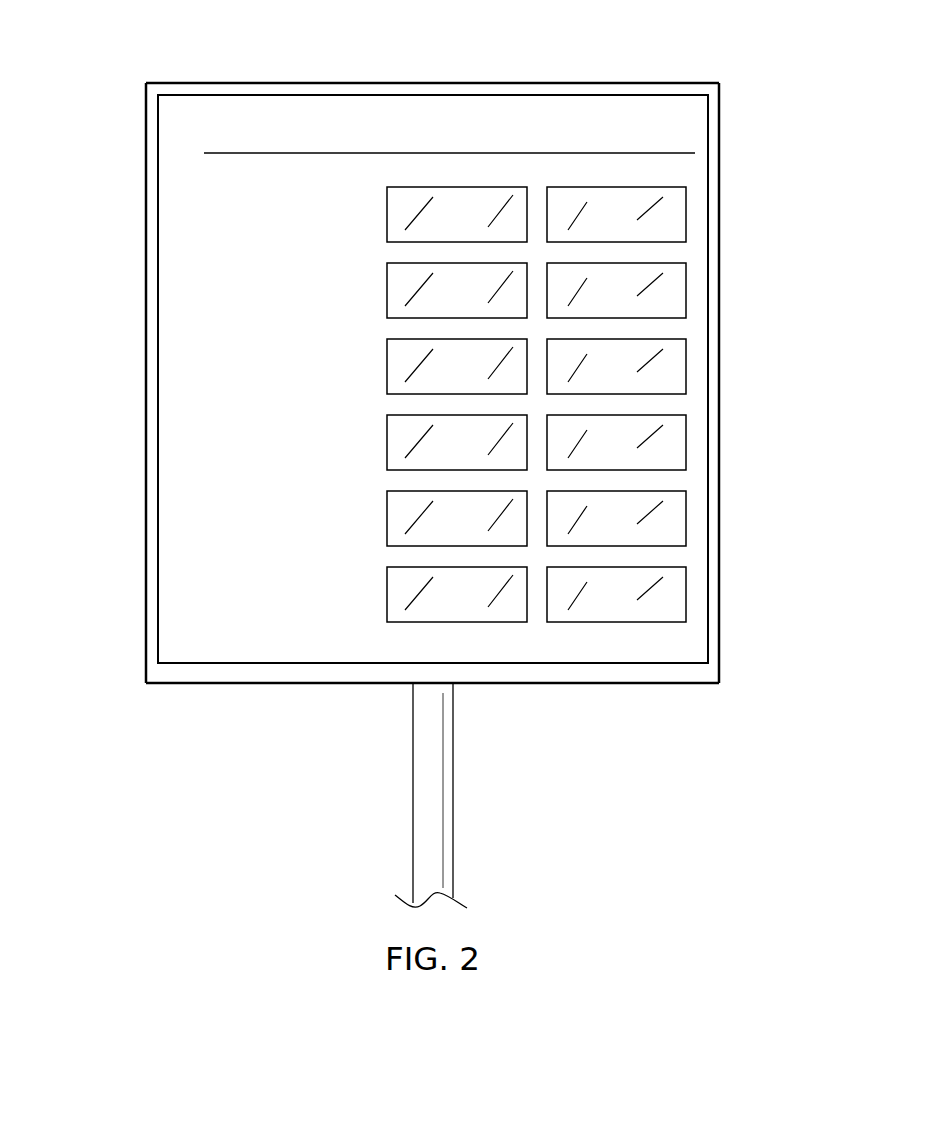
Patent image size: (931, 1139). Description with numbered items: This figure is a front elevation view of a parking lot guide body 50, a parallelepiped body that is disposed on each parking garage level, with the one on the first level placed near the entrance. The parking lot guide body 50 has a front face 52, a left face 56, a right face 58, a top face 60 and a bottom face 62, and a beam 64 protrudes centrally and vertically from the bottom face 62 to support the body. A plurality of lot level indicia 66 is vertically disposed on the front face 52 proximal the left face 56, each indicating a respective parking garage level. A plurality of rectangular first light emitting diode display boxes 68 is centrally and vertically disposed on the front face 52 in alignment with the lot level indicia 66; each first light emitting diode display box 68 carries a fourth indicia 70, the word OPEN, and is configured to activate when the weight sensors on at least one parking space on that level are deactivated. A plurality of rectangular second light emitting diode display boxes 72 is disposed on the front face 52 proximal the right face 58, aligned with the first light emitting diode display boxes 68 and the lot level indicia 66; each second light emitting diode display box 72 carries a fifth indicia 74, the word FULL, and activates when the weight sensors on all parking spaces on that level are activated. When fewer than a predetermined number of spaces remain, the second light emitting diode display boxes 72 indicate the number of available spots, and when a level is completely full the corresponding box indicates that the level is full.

The parking lot guide body 50 is at (421, 392).
The front face 52 is at (178, 472).
The left face 56 is at (146, 317).
The right face 58 is at (720, 430).
The top face 60 is at (420, 83).
The bottom face 62 is at (605, 683).
The beam 64 is at (453, 787).
The lot level indicia 66 is at (200, 287).
The first light emitting diode display boxes 68 is at (462, 263).
The fourth indicia 70 is at (405, 597).
The second light emitting diode display boxes 72 is at (686, 188).
The fifth indicia 74 is at (650, 512).